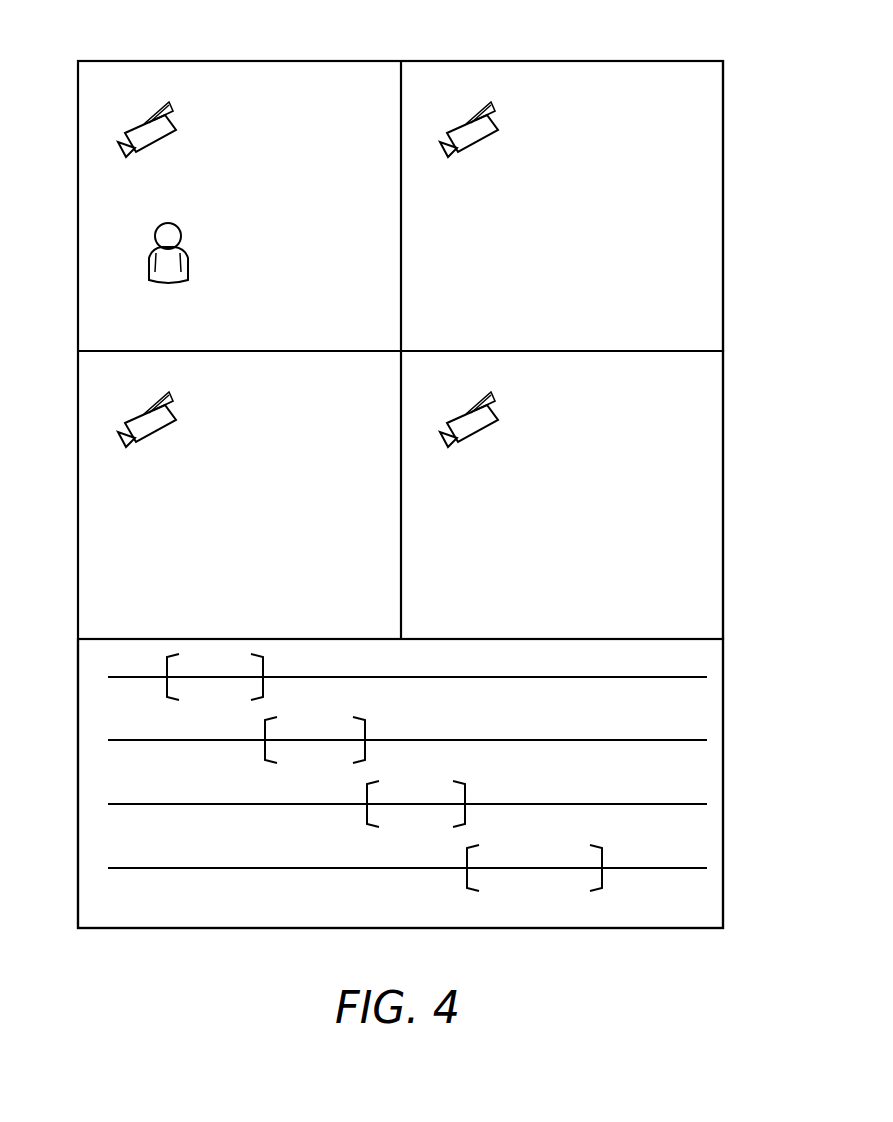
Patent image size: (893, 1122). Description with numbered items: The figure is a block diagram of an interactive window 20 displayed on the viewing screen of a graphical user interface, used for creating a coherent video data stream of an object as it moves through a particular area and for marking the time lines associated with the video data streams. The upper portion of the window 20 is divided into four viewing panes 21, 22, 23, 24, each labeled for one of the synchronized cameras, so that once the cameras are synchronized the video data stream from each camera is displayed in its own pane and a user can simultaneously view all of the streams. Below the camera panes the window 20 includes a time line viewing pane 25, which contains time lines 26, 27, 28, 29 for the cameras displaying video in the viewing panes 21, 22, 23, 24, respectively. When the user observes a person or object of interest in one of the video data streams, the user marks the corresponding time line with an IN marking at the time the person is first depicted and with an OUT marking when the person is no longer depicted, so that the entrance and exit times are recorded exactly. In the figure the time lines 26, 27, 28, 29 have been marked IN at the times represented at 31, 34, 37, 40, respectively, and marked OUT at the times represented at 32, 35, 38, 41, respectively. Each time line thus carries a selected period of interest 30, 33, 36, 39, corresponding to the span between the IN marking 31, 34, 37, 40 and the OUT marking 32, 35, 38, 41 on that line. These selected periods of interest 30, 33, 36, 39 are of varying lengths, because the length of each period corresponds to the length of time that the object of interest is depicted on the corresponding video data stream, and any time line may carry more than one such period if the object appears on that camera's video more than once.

The interactive window 20 is at (707, 33).
The viewing pane 21 is at (90, 84).
The viewing pane 22 is at (712, 86).
The viewing pane 23 is at (712, 376).
The viewing pane 24 is at (90, 374).
The time line viewing pane 25 is at (710, 909).
The time line 26 is at (693, 676).
The time line 27 is at (693, 739).
The time line 28 is at (693, 803).
The time line 29 is at (693, 867).
The selected period of interest 30 is at (212, 652).
The IN marking 31 is at (162, 689).
The OUT marking 32 is at (268, 667).
The selected period of interest 33 is at (328, 717).
The IN marking 34 is at (261, 752).
The OUT marking 35 is at (370, 730).
The selected period of interest 36 is at (420, 785).
The IN marking 37 is at (363, 815).
The OUT marking 38 is at (470, 793).
The selected period of interest 39 is at (545, 850).
The IN marking 40 is at (463, 880).
The OUT marking 41 is at (607, 857).